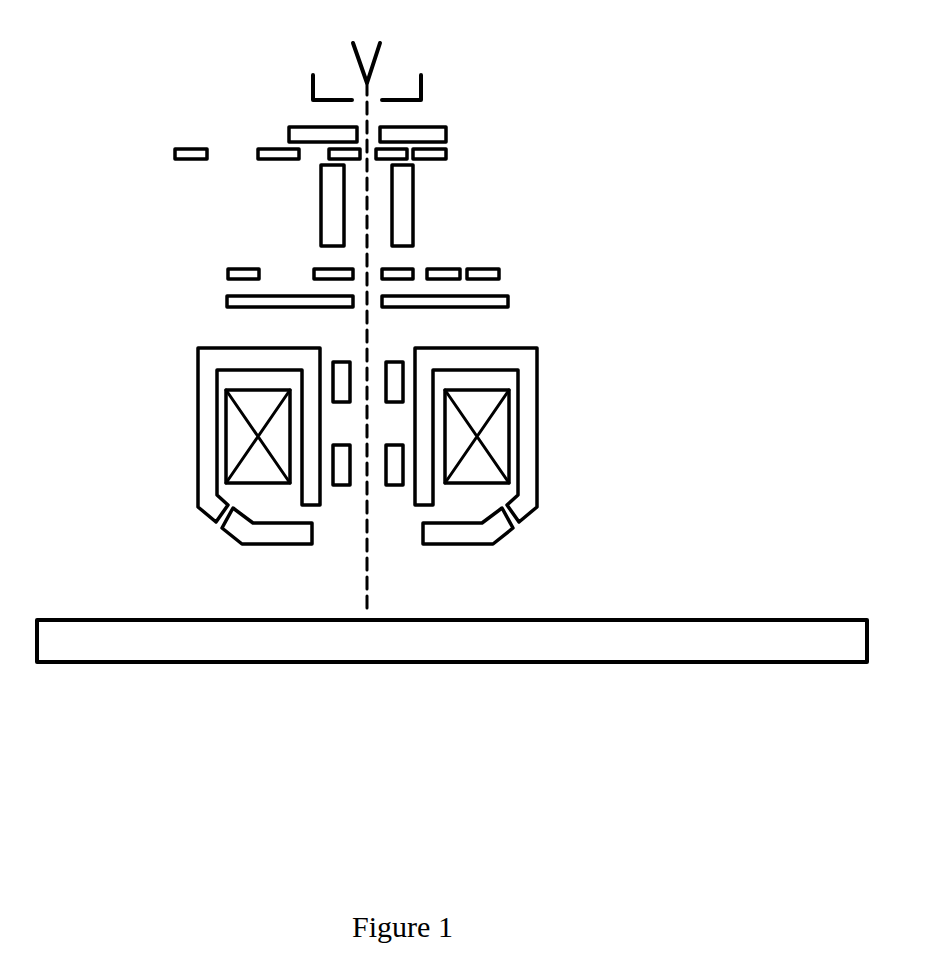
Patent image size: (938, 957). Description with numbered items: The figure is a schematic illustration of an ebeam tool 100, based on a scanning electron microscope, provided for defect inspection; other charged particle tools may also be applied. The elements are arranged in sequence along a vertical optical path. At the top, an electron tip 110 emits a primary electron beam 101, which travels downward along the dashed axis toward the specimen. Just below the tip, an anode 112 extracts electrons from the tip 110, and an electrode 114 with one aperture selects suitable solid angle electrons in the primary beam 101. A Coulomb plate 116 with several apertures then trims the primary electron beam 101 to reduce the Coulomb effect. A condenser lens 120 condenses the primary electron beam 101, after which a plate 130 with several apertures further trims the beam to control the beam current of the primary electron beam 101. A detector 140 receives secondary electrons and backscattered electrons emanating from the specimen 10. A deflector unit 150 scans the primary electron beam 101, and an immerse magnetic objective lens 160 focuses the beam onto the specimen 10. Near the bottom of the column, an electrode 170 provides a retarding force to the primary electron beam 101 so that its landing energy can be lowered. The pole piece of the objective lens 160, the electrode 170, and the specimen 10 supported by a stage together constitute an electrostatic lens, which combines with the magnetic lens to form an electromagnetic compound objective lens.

The ebeam tool 100 is at (60, 36).
The electron tip 110 is at (381, 52).
The primary electron beam 101 is at (361, 115).
The anode 112 is at (424, 92).
The electrode 114 is at (449, 135).
The Coulomb plate 116 is at (192, 147).
The condenser lens 120 is at (418, 207).
The plate 130 is at (238, 267).
The detector 140 is at (512, 300).
The deflector unit 150 is at (340, 358).
The immerse magnetic objective lens 160 is at (541, 408).
The electrode 170 is at (508, 538).
The specimen 10 is at (738, 618).